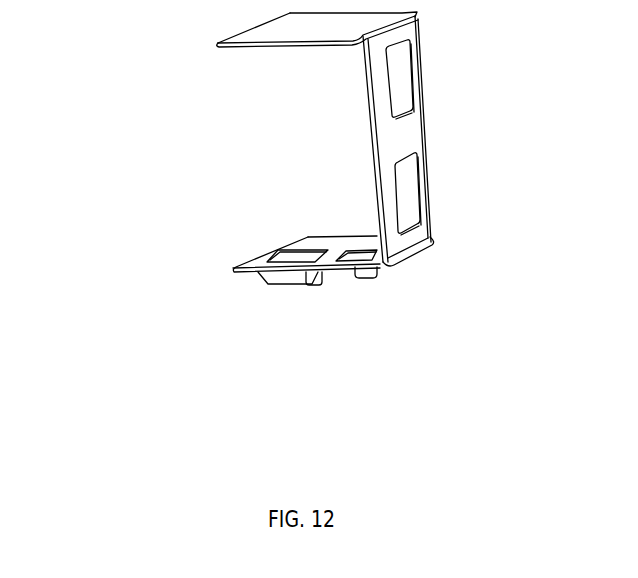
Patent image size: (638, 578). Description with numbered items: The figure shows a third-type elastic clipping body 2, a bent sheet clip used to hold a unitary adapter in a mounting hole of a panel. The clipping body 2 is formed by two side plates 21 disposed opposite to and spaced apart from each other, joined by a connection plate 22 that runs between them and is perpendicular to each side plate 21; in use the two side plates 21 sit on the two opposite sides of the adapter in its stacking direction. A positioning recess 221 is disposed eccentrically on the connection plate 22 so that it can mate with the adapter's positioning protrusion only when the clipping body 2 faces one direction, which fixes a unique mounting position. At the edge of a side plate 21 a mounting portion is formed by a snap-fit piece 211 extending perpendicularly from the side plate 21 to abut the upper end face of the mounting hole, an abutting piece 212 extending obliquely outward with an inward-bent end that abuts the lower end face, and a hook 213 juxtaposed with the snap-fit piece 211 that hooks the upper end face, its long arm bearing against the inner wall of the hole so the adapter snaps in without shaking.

The elastic clipping body 2 is at (297, 233).
The side plate 21 is at (218, 45).
The connection plate 22 is at (318, 155).
The positioning recess 221 is at (402, 93).
The snap-fit piece 211 is at (318, 282).
The abutting piece 212 is at (282, 278).
The hook 213 is at (365, 277).